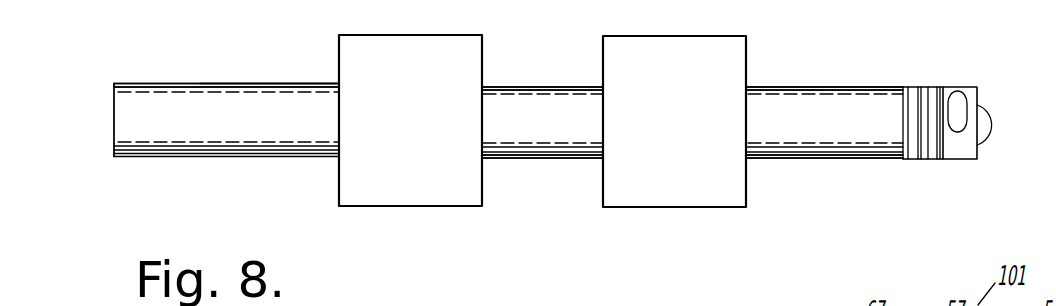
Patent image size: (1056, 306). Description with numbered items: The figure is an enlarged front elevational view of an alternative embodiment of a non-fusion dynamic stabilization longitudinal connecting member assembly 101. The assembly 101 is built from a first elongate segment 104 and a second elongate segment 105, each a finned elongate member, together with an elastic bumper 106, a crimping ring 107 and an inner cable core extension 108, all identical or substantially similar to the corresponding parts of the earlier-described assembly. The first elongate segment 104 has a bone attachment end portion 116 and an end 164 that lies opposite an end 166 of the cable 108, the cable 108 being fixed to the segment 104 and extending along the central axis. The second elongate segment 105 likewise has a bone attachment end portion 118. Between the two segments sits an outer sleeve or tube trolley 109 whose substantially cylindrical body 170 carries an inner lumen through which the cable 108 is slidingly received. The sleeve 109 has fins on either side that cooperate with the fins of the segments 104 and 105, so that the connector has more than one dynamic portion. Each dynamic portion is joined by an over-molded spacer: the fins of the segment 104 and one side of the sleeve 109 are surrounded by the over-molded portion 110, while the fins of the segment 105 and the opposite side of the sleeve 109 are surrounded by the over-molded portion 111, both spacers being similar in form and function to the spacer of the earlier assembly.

The non-fusion dynamic stabilization longitudinal connecting member assembly 101 is at (243, 174).
The end of segment 164 is at (112, 96).
The first elongate segment 104 is at (179, 71).
The bone attachment end portion 116 is at (234, 84).
The over-molded portion 110 is at (402, 207).
The cylindrical body 170 is at (513, 87).
The outer sleeve or tube trolley 109 is at (552, 159).
The over-molded portion 111 is at (667, 208).
The bone attachment end portion 118 is at (798, 84).
The second elongate segment 105 is at (813, 176).
The elastic bumper 106 is at (930, 87).
The crimping ring 107 is at (970, 87).
The inner cable core extension 108 is at (987, 102).
The end of cable 166 is at (993, 125).